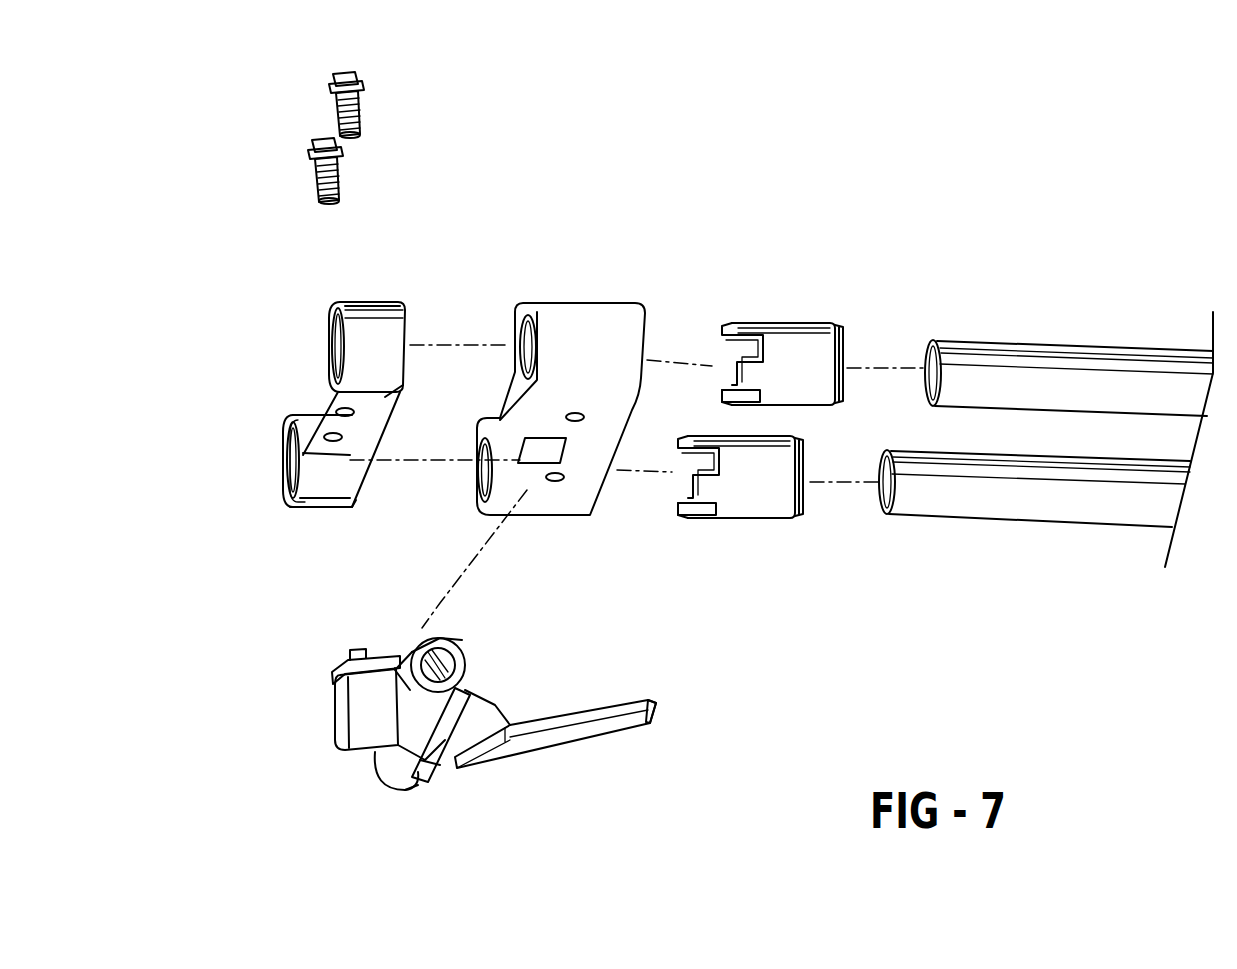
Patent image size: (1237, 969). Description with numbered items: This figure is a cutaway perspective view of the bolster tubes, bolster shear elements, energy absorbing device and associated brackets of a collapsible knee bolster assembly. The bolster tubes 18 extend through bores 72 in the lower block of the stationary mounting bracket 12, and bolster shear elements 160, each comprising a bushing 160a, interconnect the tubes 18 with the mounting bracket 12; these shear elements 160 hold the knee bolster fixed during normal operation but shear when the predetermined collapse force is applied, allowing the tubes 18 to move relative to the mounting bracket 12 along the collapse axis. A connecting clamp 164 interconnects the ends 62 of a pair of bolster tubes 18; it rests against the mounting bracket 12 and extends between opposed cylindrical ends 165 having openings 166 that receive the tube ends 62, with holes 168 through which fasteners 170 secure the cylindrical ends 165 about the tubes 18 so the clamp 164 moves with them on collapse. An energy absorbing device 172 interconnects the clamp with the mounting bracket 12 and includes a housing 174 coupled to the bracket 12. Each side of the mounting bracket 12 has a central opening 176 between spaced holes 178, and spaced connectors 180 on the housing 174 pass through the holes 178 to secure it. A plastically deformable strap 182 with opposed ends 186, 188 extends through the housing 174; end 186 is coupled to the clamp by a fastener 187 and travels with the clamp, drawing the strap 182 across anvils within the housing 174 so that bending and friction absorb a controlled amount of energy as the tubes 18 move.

The mounting bracket 12 is at (556, 454).
The bolster tubes 18 is at (1022, 442).
The ends of the bolster tubes 62 is at (925, 360).
The bores 72 is at (525, 332).
The bolster shear elements 160 is at (772, 427).
The bushing 160a is at (850, 335).
The connecting clamp 164 is at (313, 396).
The cylindrical ends 165 is at (372, 310).
The openings 166 is at (335, 333).
The holes 168 is at (343, 439).
The fasteners 170 is at (333, 196).
The energy absorbing device 172 is at (475, 728).
The housing 174 is at (385, 790).
The central opening 176 is at (566, 455).
The holes 178 is at (582, 420).
The connectors 180 is at (465, 642).
The strap 182 is at (545, 752).
The end of strap 186 is at (335, 672).
The fastener 187 is at (360, 655).
The end of strap 188 is at (655, 718).